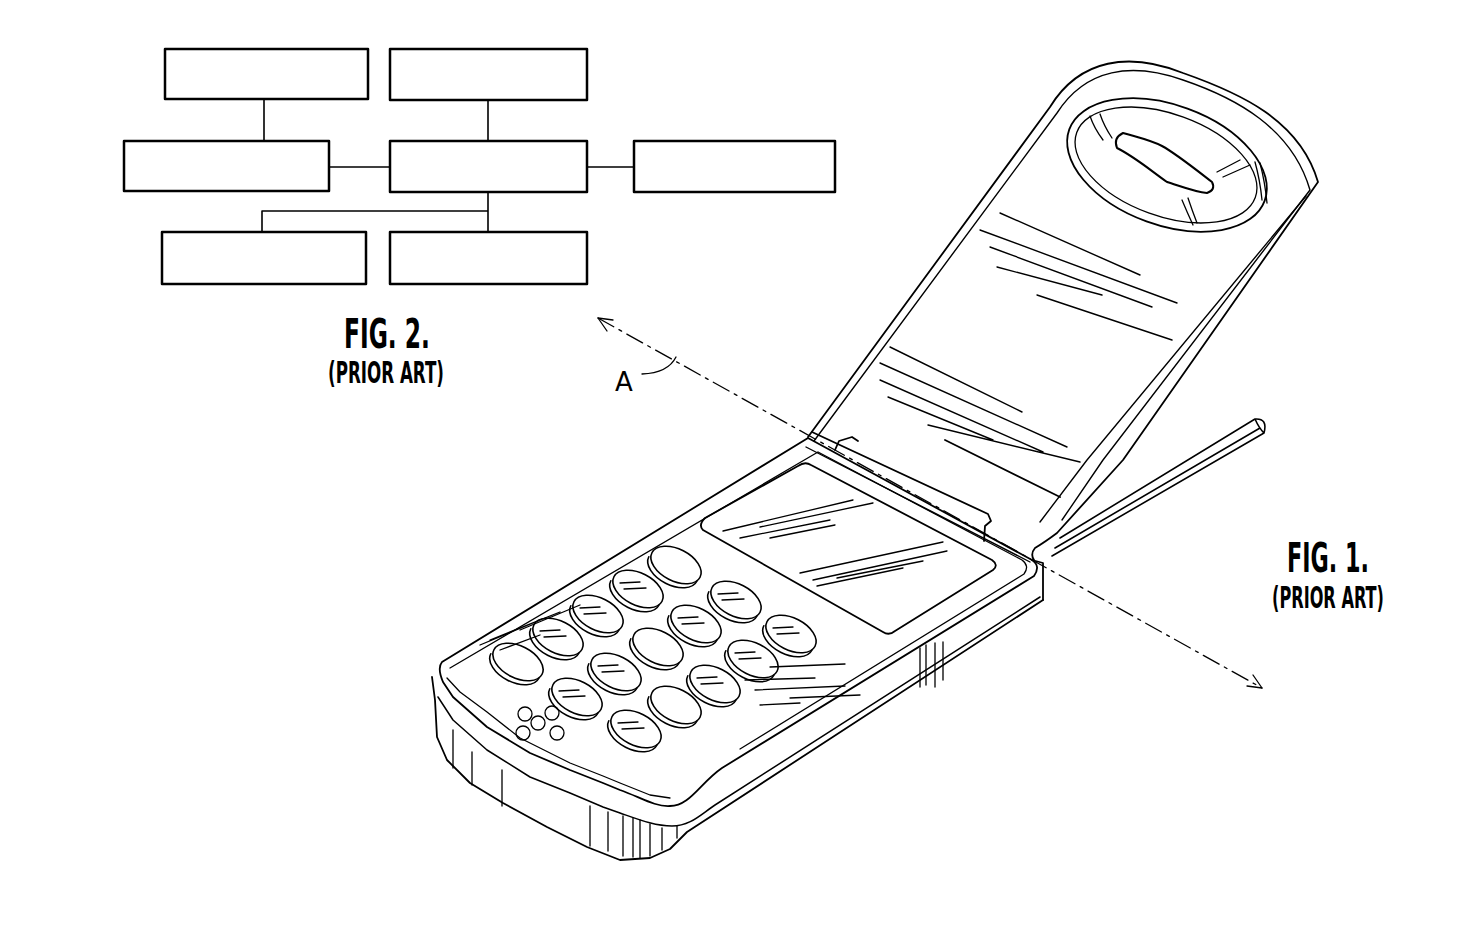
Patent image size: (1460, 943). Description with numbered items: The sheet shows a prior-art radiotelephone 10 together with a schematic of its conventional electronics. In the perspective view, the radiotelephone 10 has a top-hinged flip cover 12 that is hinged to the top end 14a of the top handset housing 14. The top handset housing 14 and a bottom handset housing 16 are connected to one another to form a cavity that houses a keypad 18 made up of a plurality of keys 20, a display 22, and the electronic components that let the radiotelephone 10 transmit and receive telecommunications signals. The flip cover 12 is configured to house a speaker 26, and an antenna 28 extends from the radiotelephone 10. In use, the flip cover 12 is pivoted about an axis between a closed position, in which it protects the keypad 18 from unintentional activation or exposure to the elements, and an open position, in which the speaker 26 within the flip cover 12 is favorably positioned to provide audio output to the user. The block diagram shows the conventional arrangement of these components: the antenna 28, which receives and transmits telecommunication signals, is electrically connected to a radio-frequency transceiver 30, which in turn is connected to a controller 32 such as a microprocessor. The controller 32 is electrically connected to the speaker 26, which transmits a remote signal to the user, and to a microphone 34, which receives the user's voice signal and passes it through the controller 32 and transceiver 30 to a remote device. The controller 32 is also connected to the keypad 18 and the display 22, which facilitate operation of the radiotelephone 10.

In FIG. 1, the radiotelephone 10 is at (1352, 148).
In FIG. 1, the flip cover 12 is at (1246, 286).
In FIG. 1, the top handset housing 14 is at (687, 797).
In FIG. 1, the top end 14a is at (1040, 598).
In FIG. 1, the bottom handset housing 16 is at (935, 687).
In FIG. 2, the keypad 18 is at (176, 232).
In FIG. 1, the keypad 18 is at (704, 681).
In FIG. 1, the keys 20 is at (645, 738).
In FIG. 2, the display 22 is at (542, 232).
In FIG. 1, the display 22 is at (925, 551).
In FIG. 2, the speaker 26 is at (539, 49).
In FIG. 1, the speaker 26 is at (1178, 156).
In FIG. 2, the antenna 28 is at (278, 49).
In FIG. 1, the antenna 28 is at (1255, 438).
In FIG. 2, the radio-frequency transceiver 30 is at (280, 141).
In FIG. 2, the controller 32 is at (521, 141).
In FIG. 2, the microphone 34 is at (766, 141).